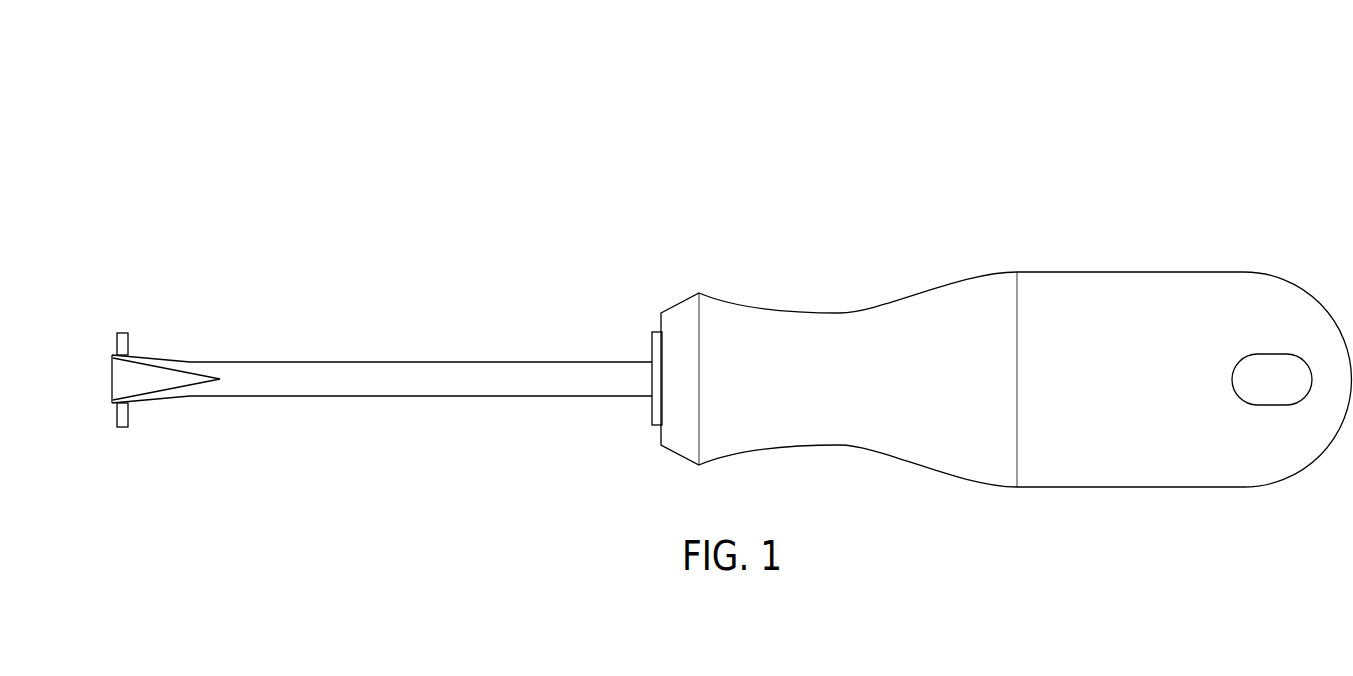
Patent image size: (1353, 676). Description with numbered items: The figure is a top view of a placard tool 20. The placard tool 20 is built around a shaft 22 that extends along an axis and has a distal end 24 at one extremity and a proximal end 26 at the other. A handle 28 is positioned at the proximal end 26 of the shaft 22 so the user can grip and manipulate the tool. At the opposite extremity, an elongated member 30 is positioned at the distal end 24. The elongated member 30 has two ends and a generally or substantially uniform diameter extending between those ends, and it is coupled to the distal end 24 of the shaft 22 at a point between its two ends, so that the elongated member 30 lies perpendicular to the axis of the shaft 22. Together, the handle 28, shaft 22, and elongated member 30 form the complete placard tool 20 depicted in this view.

The placard tool 20 is at (945, 138).
The shaft 22 is at (411, 370).
The distal end 24 is at (112, 380).
The proximal end 26 is at (655, 394).
The handle 28 is at (117, 415).
The elongated member 30 is at (117, 343).